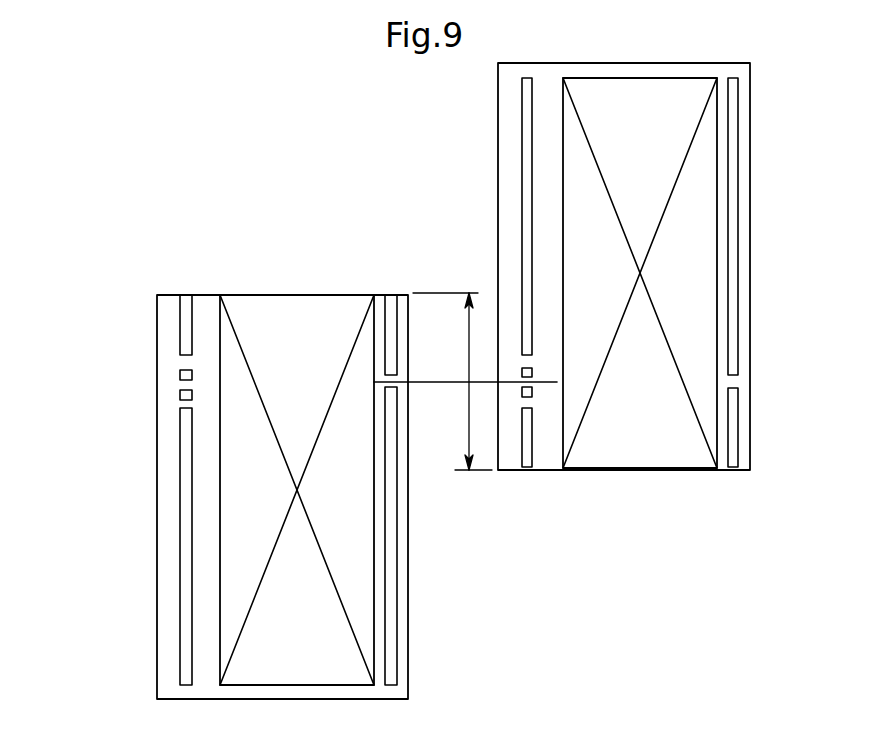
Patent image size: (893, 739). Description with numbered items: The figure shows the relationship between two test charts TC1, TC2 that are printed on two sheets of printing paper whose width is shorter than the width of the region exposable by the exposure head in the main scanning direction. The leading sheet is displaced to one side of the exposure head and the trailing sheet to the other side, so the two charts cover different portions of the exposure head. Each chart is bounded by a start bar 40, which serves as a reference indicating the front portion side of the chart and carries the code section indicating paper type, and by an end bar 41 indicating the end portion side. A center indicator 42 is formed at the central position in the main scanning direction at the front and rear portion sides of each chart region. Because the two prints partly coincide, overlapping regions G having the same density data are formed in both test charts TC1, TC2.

The start bar 40 is at (180, 482).
The end bar 41 is at (397, 537).
The center indicator 42 is at (220, 382).
The test chart TC1 is at (157, 605).
The test chart TC2 is at (638, 470).
The overlapping region G is at (467, 362).